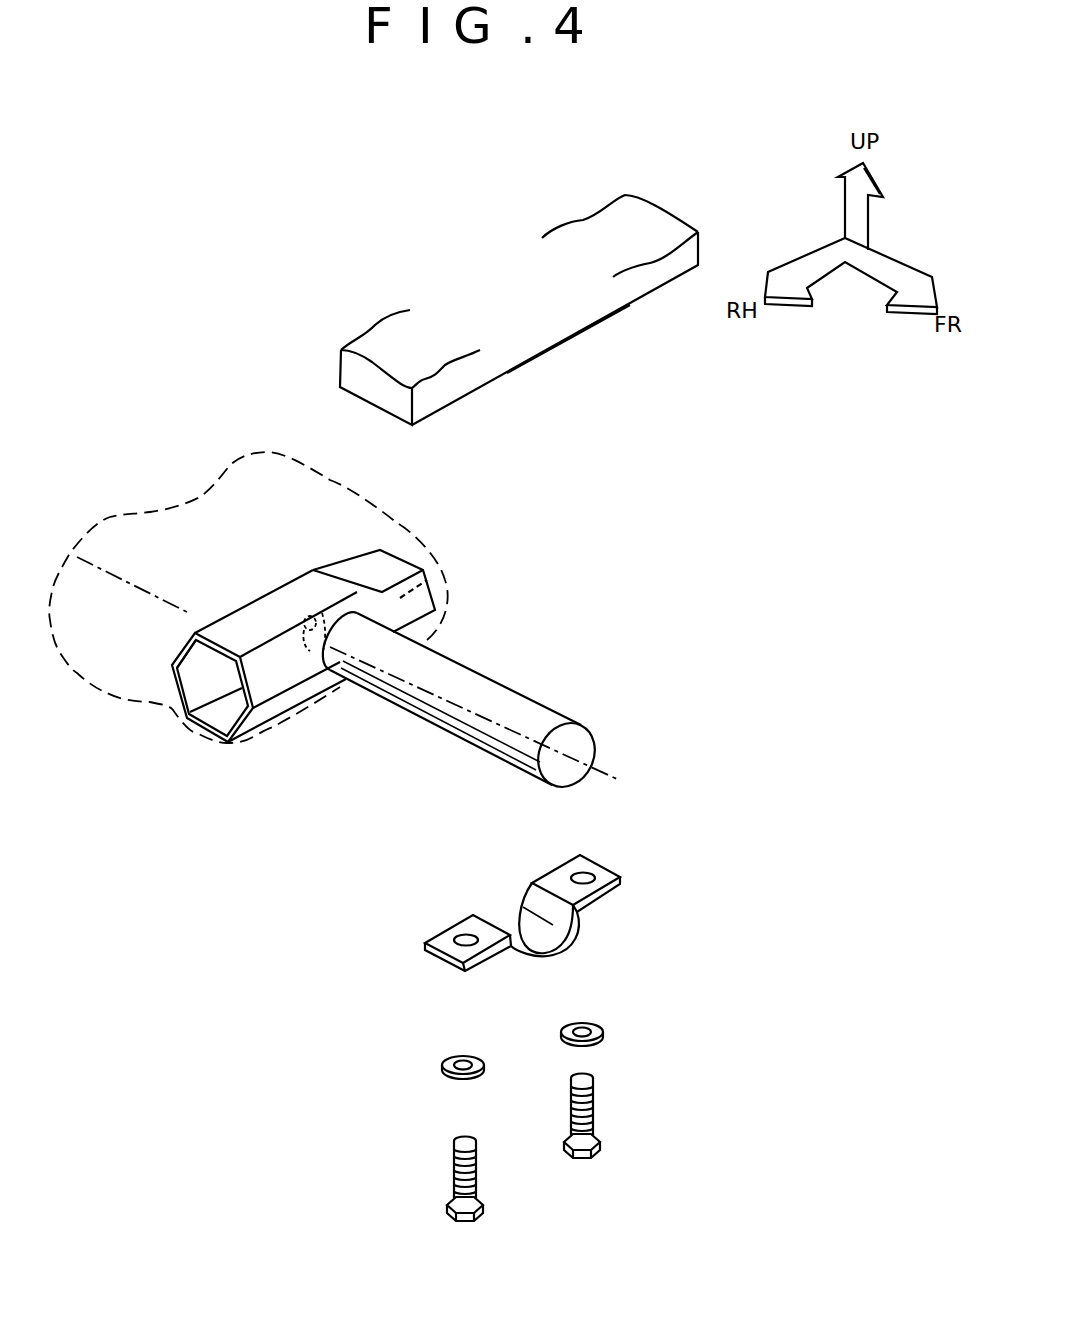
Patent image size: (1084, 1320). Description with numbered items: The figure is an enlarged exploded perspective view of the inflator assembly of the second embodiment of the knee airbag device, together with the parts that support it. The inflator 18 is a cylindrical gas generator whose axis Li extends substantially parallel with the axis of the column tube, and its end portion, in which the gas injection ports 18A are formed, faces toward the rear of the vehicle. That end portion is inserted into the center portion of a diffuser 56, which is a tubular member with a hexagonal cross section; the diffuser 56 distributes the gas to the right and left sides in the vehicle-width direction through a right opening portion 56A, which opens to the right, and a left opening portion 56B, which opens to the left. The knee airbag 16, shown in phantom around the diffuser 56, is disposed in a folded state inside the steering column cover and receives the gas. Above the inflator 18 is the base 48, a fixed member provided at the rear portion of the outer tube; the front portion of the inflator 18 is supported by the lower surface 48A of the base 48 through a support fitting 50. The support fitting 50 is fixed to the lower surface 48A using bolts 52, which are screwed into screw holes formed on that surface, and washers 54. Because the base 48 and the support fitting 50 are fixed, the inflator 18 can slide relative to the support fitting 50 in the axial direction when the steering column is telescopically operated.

The knee airbag 16 is at (120, 517).
The inflator 18 is at (490, 672).
The gas injection ports 18A is at (297, 607).
The base 48 is at (337, 351).
The lower surface 48A is at (507, 375).
The support fitting 50 is at (567, 938).
The bolts 52 is at (585, 1157).
The washers 54 is at (565, 1023).
The diffuser 56 is at (232, 614).
The right opening portion 56A is at (197, 685).
The left opening portion 56B is at (405, 597).
The axis of the inflator Li is at (608, 773).